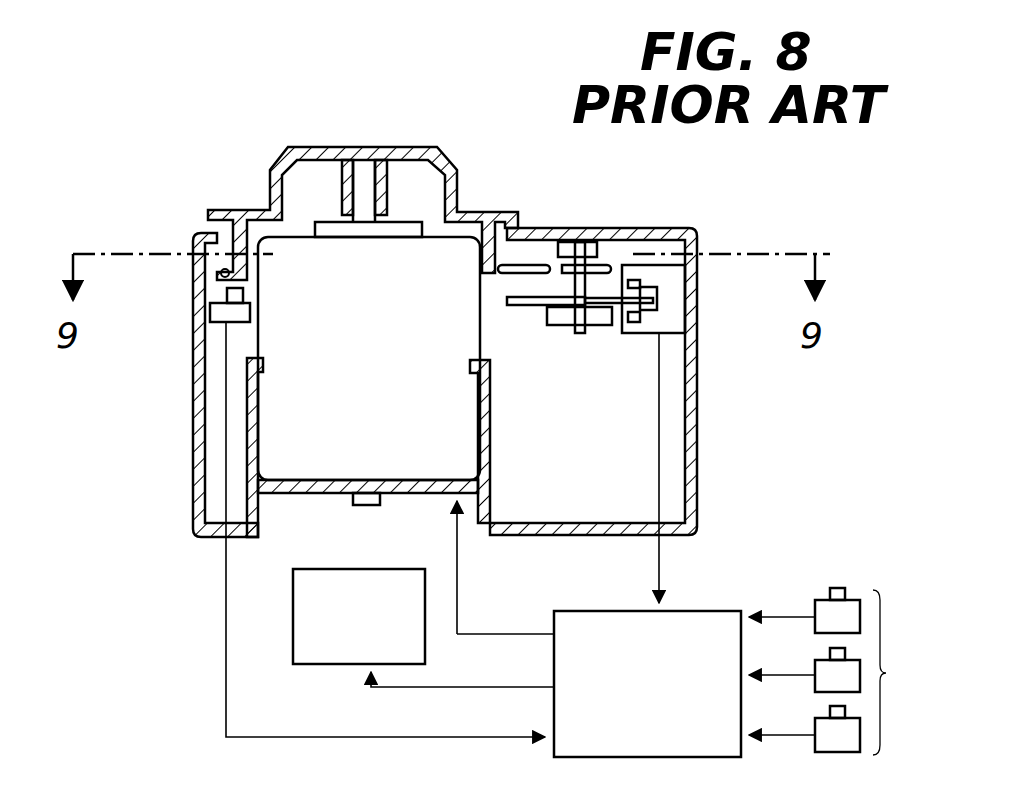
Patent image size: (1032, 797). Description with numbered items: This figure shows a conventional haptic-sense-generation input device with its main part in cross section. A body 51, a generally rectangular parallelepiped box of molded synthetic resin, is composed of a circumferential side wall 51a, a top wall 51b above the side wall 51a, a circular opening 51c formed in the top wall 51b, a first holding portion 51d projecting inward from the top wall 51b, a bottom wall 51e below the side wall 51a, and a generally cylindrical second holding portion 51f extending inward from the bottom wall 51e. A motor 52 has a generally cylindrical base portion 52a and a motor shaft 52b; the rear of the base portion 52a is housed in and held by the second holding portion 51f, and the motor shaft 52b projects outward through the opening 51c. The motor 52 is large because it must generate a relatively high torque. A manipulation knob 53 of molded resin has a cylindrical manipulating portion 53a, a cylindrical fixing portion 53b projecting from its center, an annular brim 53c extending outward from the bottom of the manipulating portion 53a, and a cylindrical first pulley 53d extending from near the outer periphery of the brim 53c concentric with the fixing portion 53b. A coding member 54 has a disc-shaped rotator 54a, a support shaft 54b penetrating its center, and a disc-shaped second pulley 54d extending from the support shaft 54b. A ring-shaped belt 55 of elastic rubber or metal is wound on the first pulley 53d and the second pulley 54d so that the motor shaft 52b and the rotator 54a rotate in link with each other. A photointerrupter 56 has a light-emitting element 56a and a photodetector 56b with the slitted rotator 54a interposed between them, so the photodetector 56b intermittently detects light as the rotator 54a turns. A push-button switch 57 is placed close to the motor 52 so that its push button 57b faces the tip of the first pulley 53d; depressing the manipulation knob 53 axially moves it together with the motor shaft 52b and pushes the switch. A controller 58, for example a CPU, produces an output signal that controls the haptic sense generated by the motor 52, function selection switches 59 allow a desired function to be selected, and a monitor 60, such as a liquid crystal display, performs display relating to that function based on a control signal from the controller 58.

The body 51 is at (702, 384).
The side wall 51a is at (697, 447).
The top wall 51b is at (667, 230).
The opening 51c is at (520, 245).
The first holding portion 51d is at (592, 250).
The bottom wall 51e is at (580, 536).
The second holding portion 51f is at (257, 430).
The motor 52 is at (487, 335).
The base portion 52a is at (465, 415).
The motor shaft 52b is at (378, 195).
The manipulation knob 53 is at (303, 128).
The manipulating portion 53a is at (275, 176).
The fixing portion 53b is at (345, 190).
The brim 53c is at (235, 217).
The first pulley 53d is at (222, 265).
The coding member 54 is at (573, 310).
The rotator 54a is at (508, 299).
The support shaft 54b is at (590, 326).
The second pulley 54d is at (606, 266).
The belt 55 is at (540, 267).
The photointerrupter 56 is at (660, 300).
The light-emitting element 56a is at (655, 287).
The photodetector 56b is at (655, 318).
The push-button switch 57 is at (212, 320).
The push button 57b is at (240, 296).
The controller 58 is at (722, 611).
The function selection switches 59 is at (834, 671).
The monitor 60 is at (335, 569).